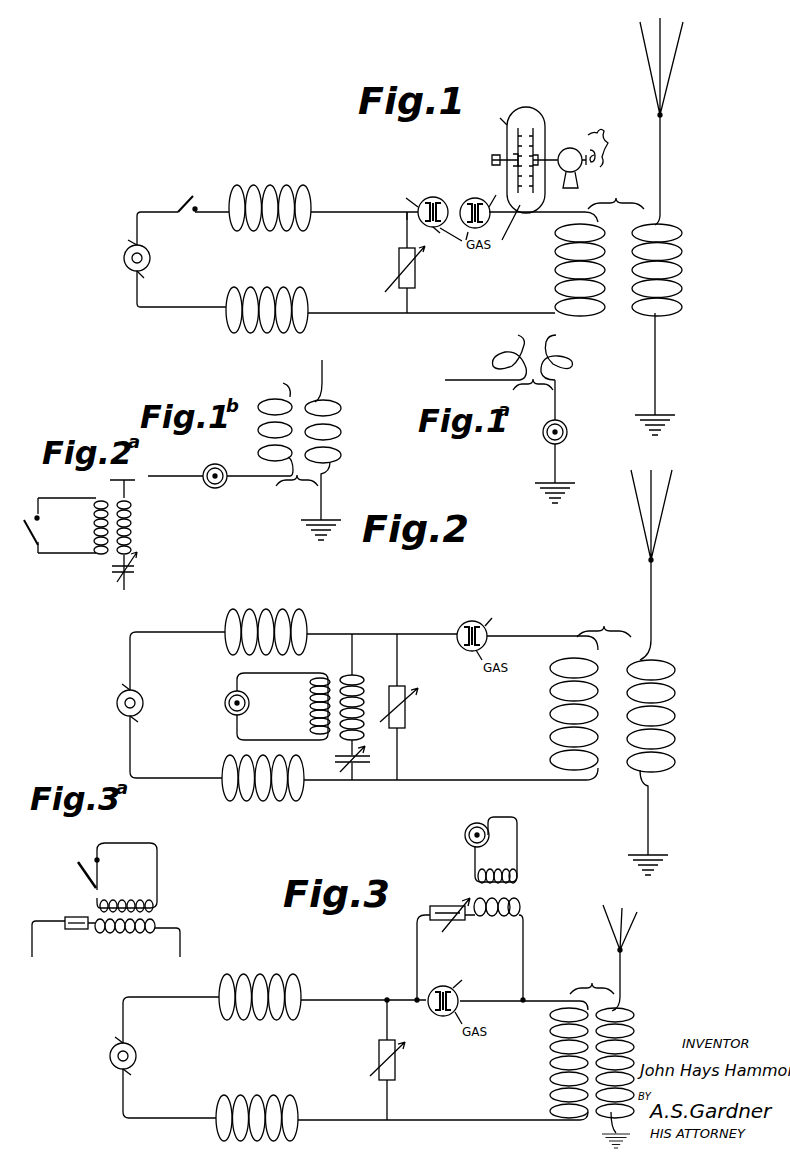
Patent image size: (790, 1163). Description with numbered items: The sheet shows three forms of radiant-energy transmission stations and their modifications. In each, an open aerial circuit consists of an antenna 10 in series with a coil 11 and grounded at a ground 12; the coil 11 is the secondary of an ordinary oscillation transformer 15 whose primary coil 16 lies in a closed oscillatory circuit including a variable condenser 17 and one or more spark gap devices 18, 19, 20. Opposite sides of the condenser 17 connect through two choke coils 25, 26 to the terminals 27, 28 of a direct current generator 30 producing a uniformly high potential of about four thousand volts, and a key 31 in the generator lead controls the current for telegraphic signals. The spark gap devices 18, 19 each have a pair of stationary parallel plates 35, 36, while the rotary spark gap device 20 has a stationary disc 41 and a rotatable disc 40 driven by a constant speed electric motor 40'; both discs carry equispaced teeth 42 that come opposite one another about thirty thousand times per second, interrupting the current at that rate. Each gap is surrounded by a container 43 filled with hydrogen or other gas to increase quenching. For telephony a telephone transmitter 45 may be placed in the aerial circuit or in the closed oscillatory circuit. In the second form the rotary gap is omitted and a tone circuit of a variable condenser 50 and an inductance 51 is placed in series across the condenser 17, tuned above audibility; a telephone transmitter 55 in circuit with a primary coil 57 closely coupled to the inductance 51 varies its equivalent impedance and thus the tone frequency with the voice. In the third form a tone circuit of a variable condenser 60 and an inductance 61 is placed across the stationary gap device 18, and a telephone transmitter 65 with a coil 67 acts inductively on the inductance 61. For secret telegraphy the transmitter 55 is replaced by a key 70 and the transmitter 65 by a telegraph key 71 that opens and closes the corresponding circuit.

In FIG. 1, the antenna 10 is at (658, 150).
In FIG. 1B, the antenna 10 is at (322, 368).
In FIG. 2, the antenna 10 is at (649, 578).
In FIG. 3, the antenna 10 is at (627, 940).
In FIG. 1, the coil 11 is at (672, 315).
In FIG. 1B, the coil 11 is at (338, 451).
In FIG. 1A, the coil 11 is at (573, 377).
In FIG. 2, the coil 11 is at (668, 708).
In FIG. 3, the coil 11 is at (628, 1038).
In FIG. 1, the ground 12 is at (667, 427).
In FIG. 1B, the ground 12 is at (321, 538).
In FIG. 1A, the ground 12 is at (559, 497).
In FIG. 2, the ground 12 is at (658, 869).
In FIG. 3, the ground 12 is at (600, 1139).
In FIG. 1, the oscillation transformer 15 is at (616, 196).
In FIG. 1B, the oscillation transformer 15 is at (288, 449).
In FIG. 1A, the oscillation transformer 15 is at (523, 375).
In FIG. 2, the oscillation transformer 15 is at (604, 624).
In FIG. 3, the oscillation transformer 15 is at (592, 980).
In FIG. 1, the primary coil 16 is at (567, 270).
In FIG. 2, the primary coil 16 is at (552, 708).
In FIG. 1, the variable condenser 17 is at (398, 266).
In FIG. 2, the variable condenser 17 is at (406, 712).
In FIG. 3, the variable condenser 17 is at (378, 1058).
In FIG. 1, the spark gap device 18 is at (435, 197).
In FIG. 2, the spark gap device 18 is at (472, 630).
In FIG. 3, the spark gap device 18 is at (443, 1018).
In FIG. 1, the spark gap device 19 is at (474, 198).
In FIG. 1, the rotary spark gap device 20 is at (527, 107).
In FIG. 1, the choke coil 25 is at (270, 190).
In FIG. 2, the choke coil 25 is at (270, 616).
In FIG. 3, the choke coil 25 is at (252, 982).
In FIG. 1, the choke coil 26 is at (267, 324).
In FIG. 2, the choke coil 26 is at (263, 790).
In FIG. 3, the choke coil 26 is at (253, 1095).
In FIG. 1, the terminal 27 is at (132, 243).
In FIG. 2, the terminal 27 is at (128, 692).
In FIG. 3, the terminal 27 is at (120, 1045).
In FIG. 1, the terminal 28 is at (155, 283).
In FIG. 2, the terminal 28 is at (147, 728).
In FIG. 3, the terminal 28 is at (141, 1081).
In FIG. 1, the direct current generator 30 is at (129, 268).
In FIG. 2, the direct current generator 30 is at (121, 711).
In FIG. 3, the direct current generator 30 is at (114, 1065).
In FIG. 1, the key 31 is at (182, 200).
In FIG. 1, the stationary plate 35 is at (418, 219).
In FIG. 1, the stationary plate 36 is at (422, 237).
In FIG. 1, the rotatable disc 40 is at (557, 146).
In FIG. 1, the constant speed electric motor 40' is at (588, 147).
In FIG. 1, the stationary disc 41 is at (518, 142).
In FIG. 1, the teeth 42 is at (533, 128).
In FIG. 1, the container 43 is at (451, 157).
In FIG. 2, the container 43 is at (502, 613).
In FIG. 3, the container 43 is at (471, 984).
In FIG. 1B, the telephone transmitter 45 is at (215, 488).
In FIG. 1A, the telephone transmitter 45 is at (567, 435).
In FIG. 2A, the variable condenser 50 is at (134, 570).
In FIG. 2, the variable condenser 50 is at (365, 759).
In FIG. 2A, the inductance 51 is at (132, 522).
In FIG. 2, the inductance 51 is at (364, 686).
In FIG. 2, the telephone transmitter 55 is at (225, 705).
In FIG. 2A, the primary coil 57 is at (93, 525).
In FIG. 2, the primary coil 57 is at (310, 706).
In FIG. 3, the variable condenser 60 is at (448, 922).
In FIG. 3A, the inductance 61 is at (138, 934).
In FIG. 3, the inductance 61 is at (498, 949).
In FIG. 3, the telephone transmitter 65 is at (466, 835).
In FIG. 3A, the coil 67 is at (120, 900).
In FIG. 3, the coil 67 is at (496, 850).
In FIG. 2A, the key 70 is at (32, 540).
In FIG. 3A, the telegraph key 71 is at (82, 875).